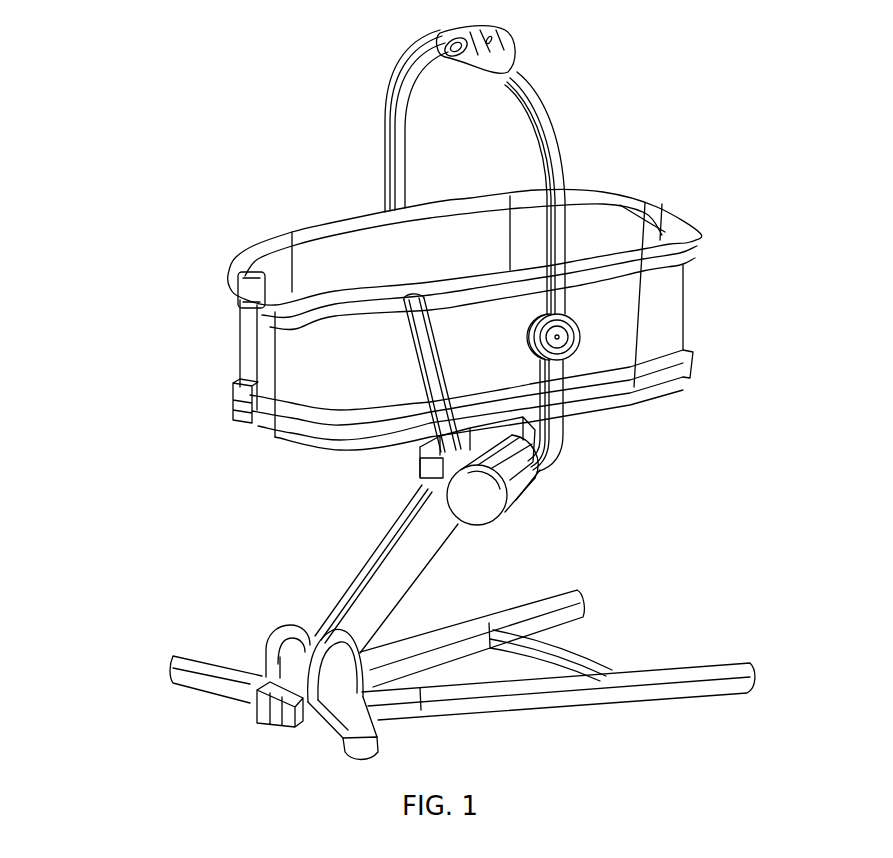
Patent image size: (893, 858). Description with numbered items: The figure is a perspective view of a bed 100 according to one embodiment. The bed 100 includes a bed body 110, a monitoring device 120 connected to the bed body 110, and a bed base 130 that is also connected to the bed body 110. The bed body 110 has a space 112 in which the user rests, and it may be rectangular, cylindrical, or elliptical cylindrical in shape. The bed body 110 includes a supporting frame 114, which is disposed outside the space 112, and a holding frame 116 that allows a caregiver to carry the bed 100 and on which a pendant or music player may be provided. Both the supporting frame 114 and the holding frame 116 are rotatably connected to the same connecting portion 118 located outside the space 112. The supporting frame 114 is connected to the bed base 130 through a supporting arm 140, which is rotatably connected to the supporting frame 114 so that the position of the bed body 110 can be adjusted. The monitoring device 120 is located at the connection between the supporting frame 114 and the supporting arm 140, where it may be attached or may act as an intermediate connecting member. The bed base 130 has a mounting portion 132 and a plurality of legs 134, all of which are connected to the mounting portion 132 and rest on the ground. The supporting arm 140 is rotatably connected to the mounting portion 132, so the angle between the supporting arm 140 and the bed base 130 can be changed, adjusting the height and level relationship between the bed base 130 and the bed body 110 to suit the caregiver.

The bed 100 is at (205, 83).
The bed body 110 is at (248, 355).
The space 112 is at (355, 270).
The supporting frame 114 is at (543, 417).
The holding frame 116 is at (555, 163).
The connecting portion 118 is at (567, 337).
The monitoring device 120 is at (475, 500).
The bed base 130 is at (112, 558).
The mounting portion 132 is at (288, 650).
The legs 134 is at (210, 667).
The supporting arm 140 is at (387, 587).